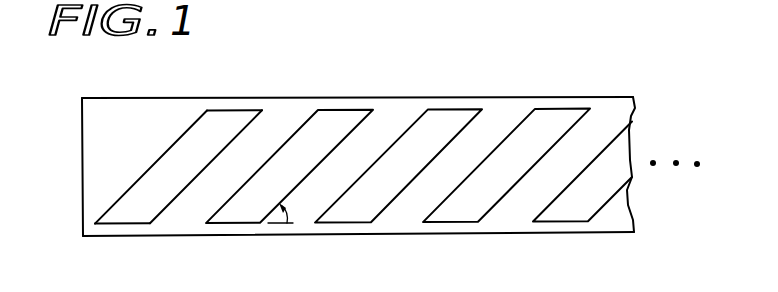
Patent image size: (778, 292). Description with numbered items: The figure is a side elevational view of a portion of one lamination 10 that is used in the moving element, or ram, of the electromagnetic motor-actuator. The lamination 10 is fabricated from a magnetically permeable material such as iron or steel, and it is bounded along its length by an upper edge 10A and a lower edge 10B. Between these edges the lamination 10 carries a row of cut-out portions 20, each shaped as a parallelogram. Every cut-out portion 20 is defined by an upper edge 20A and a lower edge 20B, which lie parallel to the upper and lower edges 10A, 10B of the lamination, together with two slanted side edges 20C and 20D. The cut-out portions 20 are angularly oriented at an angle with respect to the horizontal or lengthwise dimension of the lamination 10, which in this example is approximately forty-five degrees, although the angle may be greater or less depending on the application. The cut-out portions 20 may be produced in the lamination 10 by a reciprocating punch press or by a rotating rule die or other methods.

The lamination 10 is at (100, 138).
The upper edge 10A is at (603, 97).
The lower edge 10B is at (535, 233).
The cut-out portions 20 is at (328, 122).
The upper edge 20A is at (223, 124).
The lower edge 20B is at (113, 223).
The side edge 20C is at (136, 179).
The side edge 20D is at (202, 175).